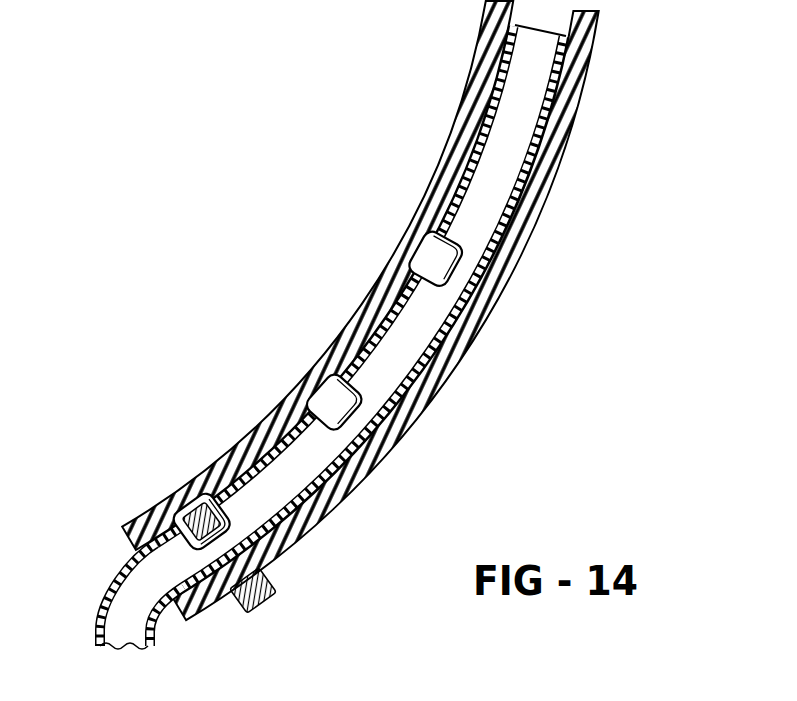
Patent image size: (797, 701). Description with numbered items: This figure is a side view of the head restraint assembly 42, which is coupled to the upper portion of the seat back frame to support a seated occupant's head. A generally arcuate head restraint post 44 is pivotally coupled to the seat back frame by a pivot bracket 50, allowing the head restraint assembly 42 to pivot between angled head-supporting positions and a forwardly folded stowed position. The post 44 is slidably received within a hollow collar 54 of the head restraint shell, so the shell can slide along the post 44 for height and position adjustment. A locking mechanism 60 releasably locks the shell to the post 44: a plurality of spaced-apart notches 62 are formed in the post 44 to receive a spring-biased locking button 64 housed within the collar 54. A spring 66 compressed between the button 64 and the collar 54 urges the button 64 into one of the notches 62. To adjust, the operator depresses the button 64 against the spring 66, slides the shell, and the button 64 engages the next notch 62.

The head restraint assembly 42 is at (597, 60).
The head restraint post 44 is at (97, 610).
The pivot bracket 50 is at (196, 0).
The hollow collar 54 is at (472, 332).
The locking mechanism 60 is at (205, 467).
The notch 62 is at (442, 250).
The locking button 64 is at (274, 573).
The spring 66 is at (182, 520).